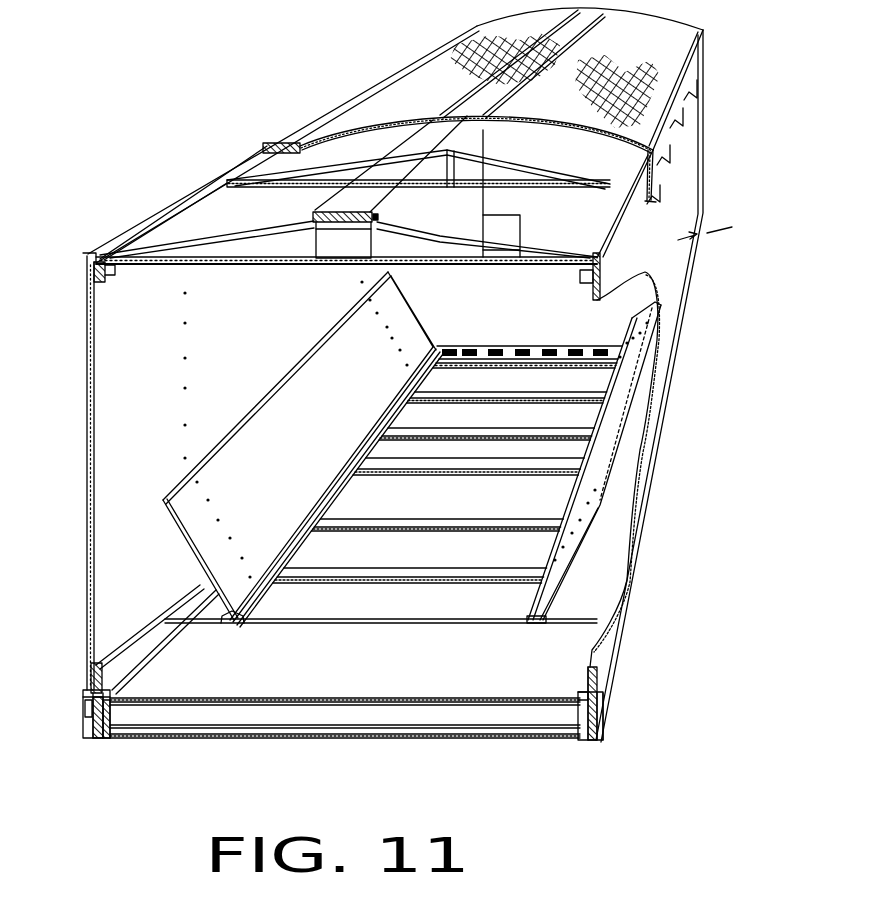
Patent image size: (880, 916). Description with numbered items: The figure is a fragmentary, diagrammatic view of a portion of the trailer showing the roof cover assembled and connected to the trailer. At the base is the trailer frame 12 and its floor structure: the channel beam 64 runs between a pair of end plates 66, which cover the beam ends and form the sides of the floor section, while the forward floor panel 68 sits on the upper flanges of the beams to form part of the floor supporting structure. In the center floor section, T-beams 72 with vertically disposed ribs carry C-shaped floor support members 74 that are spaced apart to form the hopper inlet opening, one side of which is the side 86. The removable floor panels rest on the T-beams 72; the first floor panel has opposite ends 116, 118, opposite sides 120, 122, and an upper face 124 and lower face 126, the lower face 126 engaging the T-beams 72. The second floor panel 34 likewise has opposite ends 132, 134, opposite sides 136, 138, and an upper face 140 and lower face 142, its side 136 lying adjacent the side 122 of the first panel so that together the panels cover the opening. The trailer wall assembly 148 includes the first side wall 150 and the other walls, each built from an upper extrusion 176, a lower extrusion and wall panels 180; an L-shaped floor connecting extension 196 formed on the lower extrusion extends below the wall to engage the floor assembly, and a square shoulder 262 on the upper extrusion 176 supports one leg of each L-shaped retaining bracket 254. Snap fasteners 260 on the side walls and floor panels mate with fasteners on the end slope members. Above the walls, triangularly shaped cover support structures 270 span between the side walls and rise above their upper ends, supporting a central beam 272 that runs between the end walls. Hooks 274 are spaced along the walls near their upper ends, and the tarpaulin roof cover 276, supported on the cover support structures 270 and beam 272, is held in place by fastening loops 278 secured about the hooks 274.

The trailer frame 12 is at (97, 712).
The second floor panel 34 is at (295, 380).
The channel beam 64 is at (460, 735).
The end plates 66 is at (103, 725).
The forward floor panel 68 is at (215, 698).
The T-beams 72 is at (498, 468).
The floor support members 74 is at (310, 552).
The side of the opening 86 is at (533, 362).
The end of the first floor panel 116 is at (637, 315).
The end of the first floor panel 118 is at (580, 548).
The side of the first floor panel 120 is at (528, 623).
The side of the first floor panel 122 is at (623, 418).
The upper face 124 is at (592, 524).
The lower face 126 is at (578, 483).
The end of the second floor panel 132 is at (422, 328).
The end of the second floor panel 134 is at (180, 530).
The side of the second floor panel 136 is at (232, 625).
The side of the second floor panel 138 is at (340, 318).
The upper face 140 is at (166, 507).
The lower face 142 is at (318, 494).
The trailer wall assembly 148 is at (82, 311).
The first side wall 150 is at (724, 226).
The upper extrusion 176 is at (157, 214).
The wall panels 180 is at (678, 288).
The floor connecting extension 196 is at (97, 717).
The retaining brackets 254 is at (550, 355).
The snap fasteners 260 is at (360, 282).
The shoulder 262 is at (110, 270).
The cover support structures 270 is at (282, 225).
The beam 272 is at (388, 190).
The hooks 274 is at (688, 104).
The roof cover 276 is at (680, 50).
The fastening loops 278 is at (697, 92).